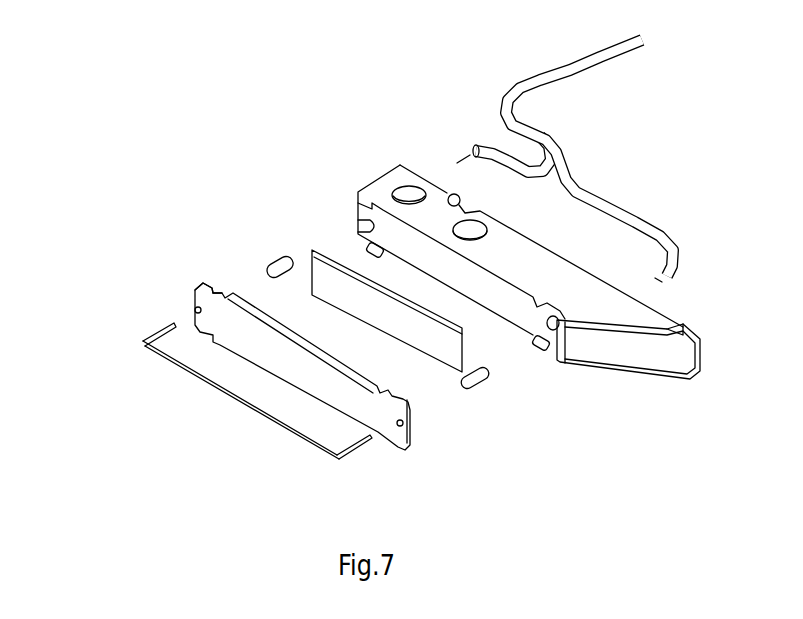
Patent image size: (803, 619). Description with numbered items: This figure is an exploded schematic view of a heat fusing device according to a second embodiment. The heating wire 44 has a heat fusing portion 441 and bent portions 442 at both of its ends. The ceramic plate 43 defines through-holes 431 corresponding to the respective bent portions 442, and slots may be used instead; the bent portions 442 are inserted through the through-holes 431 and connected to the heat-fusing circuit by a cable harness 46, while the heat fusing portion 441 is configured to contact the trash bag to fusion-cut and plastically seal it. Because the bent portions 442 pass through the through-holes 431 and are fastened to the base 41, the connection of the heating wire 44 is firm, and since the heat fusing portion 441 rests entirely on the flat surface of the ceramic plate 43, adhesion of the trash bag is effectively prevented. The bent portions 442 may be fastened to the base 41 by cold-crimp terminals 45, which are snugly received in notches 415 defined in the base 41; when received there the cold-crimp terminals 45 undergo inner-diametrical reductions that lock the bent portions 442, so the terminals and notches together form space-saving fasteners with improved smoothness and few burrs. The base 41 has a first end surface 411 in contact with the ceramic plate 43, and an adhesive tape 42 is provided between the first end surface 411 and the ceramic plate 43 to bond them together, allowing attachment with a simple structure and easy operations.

The base 41 is at (605, 348).
The first end surface 411 is at (473, 296).
The notches 415 is at (367, 220).
The adhesive tape 42 is at (427, 340).
The ceramic plate 43 is at (275, 344).
The through-holes 431 is at (193, 293).
The heating wire 44 is at (207, 351).
The heat fusing portion 441 is at (230, 400).
The bent portions 442 is at (160, 327).
The cold-crimp terminals 45 is at (275, 258).
The cable harness 46 is at (503, 110).